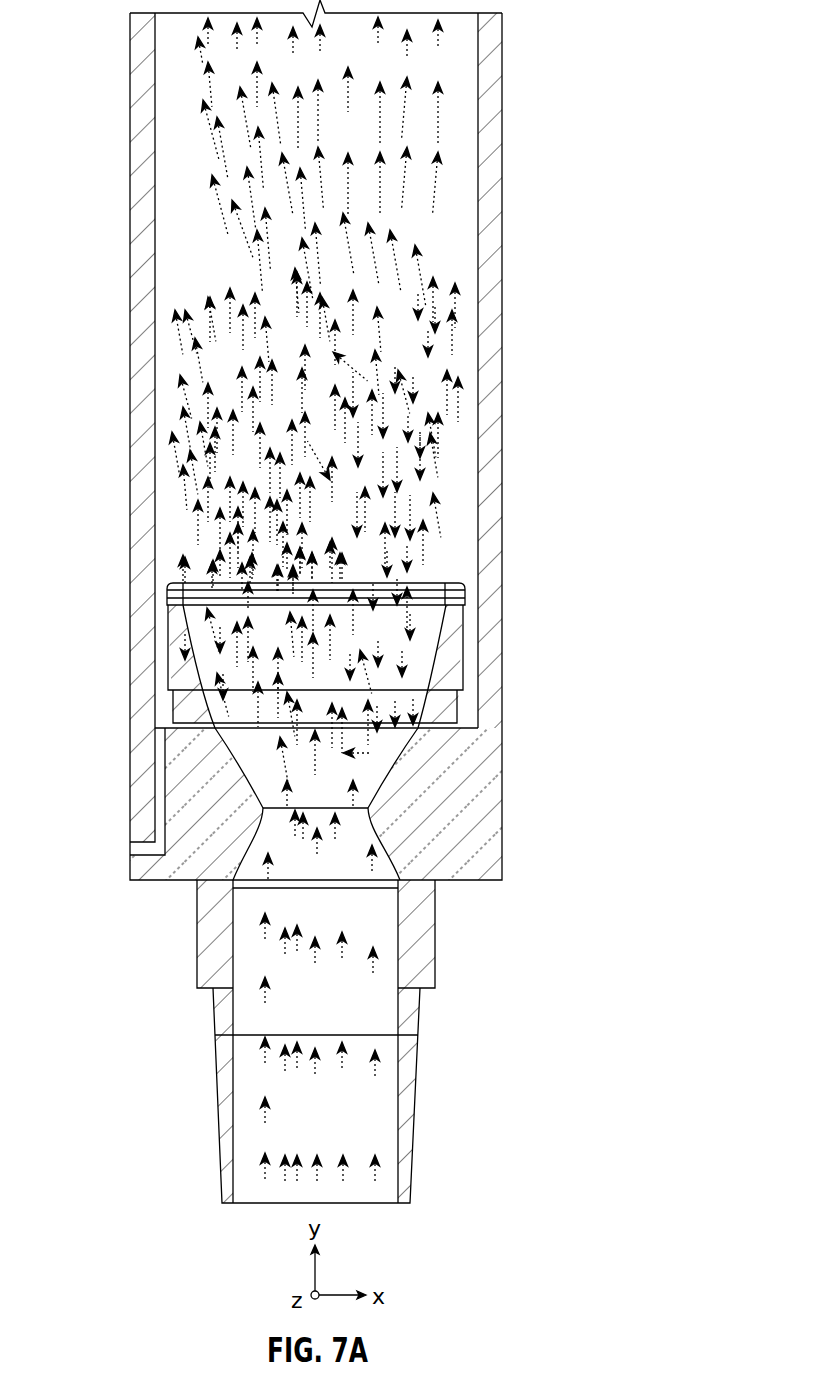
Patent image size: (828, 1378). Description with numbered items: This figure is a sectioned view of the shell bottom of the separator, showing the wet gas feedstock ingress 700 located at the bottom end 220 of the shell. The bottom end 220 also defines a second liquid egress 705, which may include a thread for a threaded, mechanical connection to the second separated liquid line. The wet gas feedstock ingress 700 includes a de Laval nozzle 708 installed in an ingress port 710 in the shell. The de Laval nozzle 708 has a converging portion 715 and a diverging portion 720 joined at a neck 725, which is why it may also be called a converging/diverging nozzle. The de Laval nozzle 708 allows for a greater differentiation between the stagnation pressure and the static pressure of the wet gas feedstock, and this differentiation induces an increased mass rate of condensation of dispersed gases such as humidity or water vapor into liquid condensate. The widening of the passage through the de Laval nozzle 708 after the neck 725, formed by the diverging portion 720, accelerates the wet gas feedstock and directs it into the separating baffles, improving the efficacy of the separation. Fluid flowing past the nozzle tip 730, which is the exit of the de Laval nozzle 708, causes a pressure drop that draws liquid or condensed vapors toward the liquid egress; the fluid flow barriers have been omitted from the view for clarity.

The wet gas feedstock ingress 700 is at (407, 1227).
The second liquid egress 705 is at (143, 880).
The de Laval nozzle 708 is at (455, 903).
The ingress port 710 is at (220, 1198).
The converging portion 715 is at (255, 835).
The diverging portion 720 is at (260, 790).
The neck 725 is at (263, 808).
The nozzle tip 730 is at (467, 590).
The bottom end of the shell 220 is at (623, 1190).